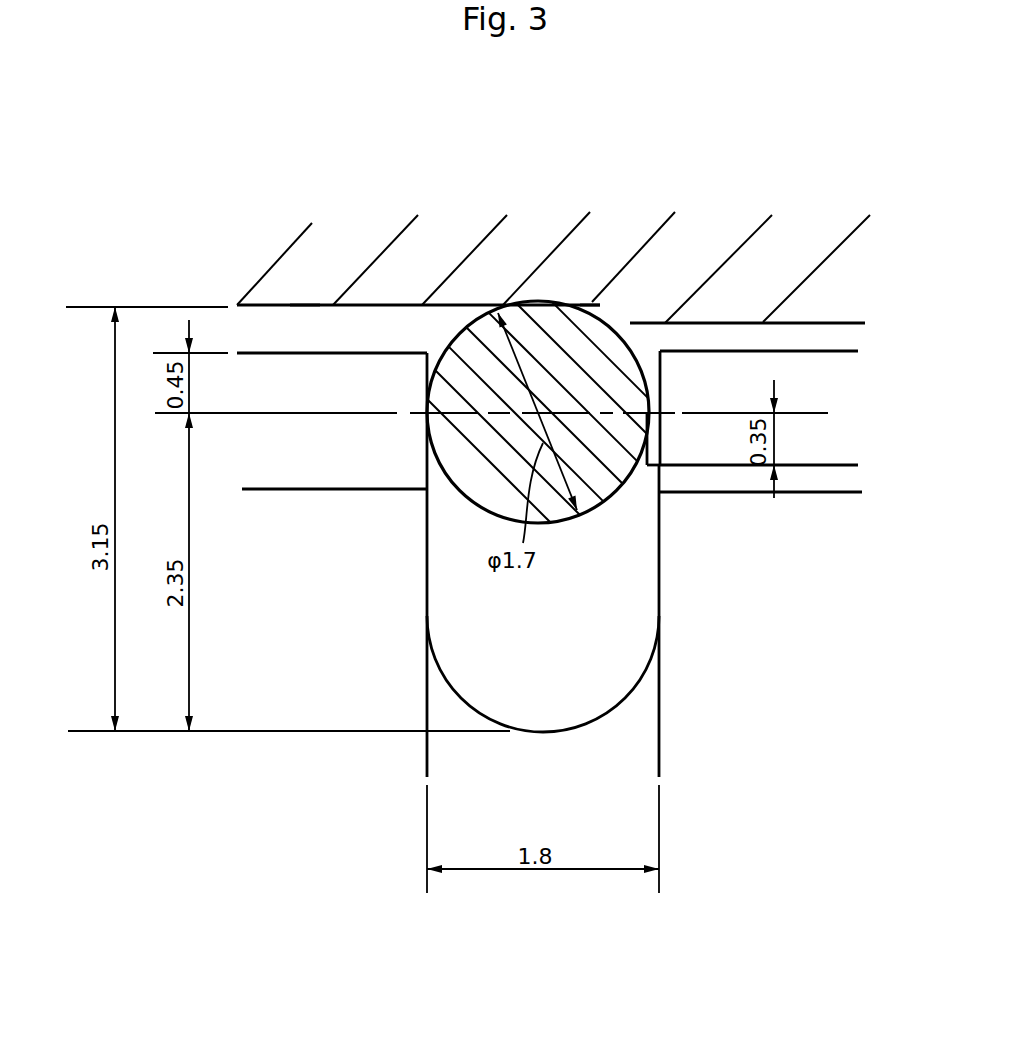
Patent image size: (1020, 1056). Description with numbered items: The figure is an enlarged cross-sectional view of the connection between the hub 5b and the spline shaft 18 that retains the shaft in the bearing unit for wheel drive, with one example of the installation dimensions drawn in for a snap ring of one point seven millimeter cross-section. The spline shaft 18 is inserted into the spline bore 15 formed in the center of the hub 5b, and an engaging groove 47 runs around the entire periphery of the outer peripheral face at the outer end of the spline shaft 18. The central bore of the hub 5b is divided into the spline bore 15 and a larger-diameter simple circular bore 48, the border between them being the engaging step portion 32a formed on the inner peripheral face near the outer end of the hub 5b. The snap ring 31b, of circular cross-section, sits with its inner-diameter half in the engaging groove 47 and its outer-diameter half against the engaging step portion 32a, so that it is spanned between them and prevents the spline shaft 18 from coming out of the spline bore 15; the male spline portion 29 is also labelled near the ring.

The hub 5b is at (392, 267).
The simple circular bore 48 is at (311, 306).
The snap ring 31b is at (477, 350).
The engaging step portion 32a is at (600, 313).
The male spline portion 29 is at (692, 362).
The spline bore 15 is at (718, 466).
The spline shaft 18 is at (812, 510).
The engaging groove 47 is at (590, 720).